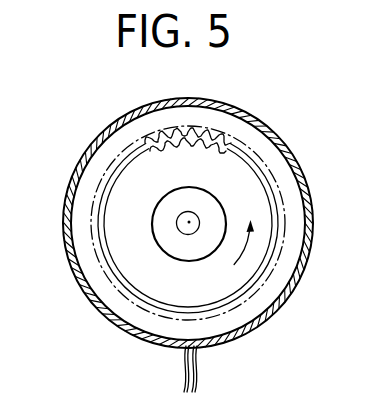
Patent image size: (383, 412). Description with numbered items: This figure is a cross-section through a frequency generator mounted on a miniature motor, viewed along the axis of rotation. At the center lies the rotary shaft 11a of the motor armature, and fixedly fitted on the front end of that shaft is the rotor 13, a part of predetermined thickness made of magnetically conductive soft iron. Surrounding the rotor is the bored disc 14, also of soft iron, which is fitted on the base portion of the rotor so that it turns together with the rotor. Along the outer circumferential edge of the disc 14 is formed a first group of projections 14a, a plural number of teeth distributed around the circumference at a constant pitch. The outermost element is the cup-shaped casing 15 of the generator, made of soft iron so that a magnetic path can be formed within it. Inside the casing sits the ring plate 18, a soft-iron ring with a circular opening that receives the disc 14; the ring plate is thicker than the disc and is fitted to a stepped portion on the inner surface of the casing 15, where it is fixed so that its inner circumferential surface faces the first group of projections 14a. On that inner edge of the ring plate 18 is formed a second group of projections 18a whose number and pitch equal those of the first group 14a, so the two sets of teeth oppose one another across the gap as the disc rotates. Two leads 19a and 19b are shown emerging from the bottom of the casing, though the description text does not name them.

The rotary shaft 11a is at (190, 222).
The rotor 13 is at (183, 250).
The bored disc 14 is at (143, 238).
The first group of projections 14a is at (162, 148).
The casing 15 is at (268, 124).
The ring plate 18 is at (104, 155).
The second group of projections 18a is at (172, 127).
The lead wire 19a is at (184, 380).
The lead wire 19b is at (197, 380).